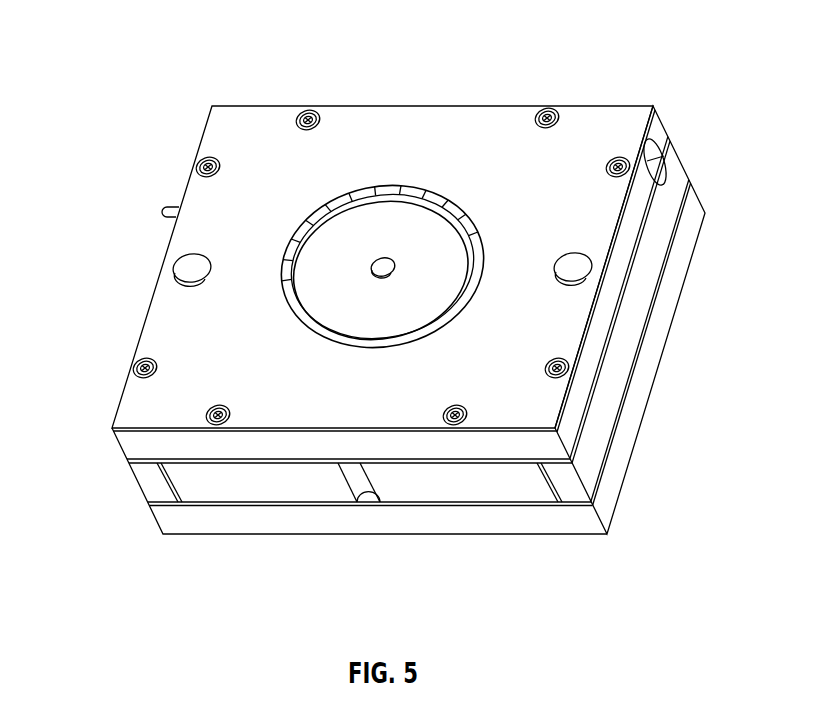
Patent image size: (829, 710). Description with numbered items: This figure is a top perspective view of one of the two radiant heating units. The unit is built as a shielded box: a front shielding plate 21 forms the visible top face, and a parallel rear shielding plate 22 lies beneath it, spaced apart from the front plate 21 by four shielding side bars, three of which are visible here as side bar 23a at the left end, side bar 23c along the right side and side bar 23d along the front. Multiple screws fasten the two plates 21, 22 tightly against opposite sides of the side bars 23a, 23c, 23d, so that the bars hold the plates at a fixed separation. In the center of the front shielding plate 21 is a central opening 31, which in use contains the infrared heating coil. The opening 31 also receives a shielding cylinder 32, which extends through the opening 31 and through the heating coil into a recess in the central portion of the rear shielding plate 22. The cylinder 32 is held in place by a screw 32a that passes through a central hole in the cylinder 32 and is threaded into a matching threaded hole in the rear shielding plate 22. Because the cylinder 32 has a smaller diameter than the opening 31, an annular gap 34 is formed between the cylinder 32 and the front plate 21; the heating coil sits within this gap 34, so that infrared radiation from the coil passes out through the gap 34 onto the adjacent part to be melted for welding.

The front shielding plate 21 is at (617, 117).
The rear shielding plate 22 is at (667, 312).
The shielding side bar 23a is at (137, 482).
The shielding side bar 23c is at (673, 175).
The shielding side bar 23d is at (460, 487).
The central opening 31 is at (293, 330).
The shielding cylinder 32 is at (425, 222).
The screw 32a is at (383, 258).
The annular gap 34 is at (475, 233).